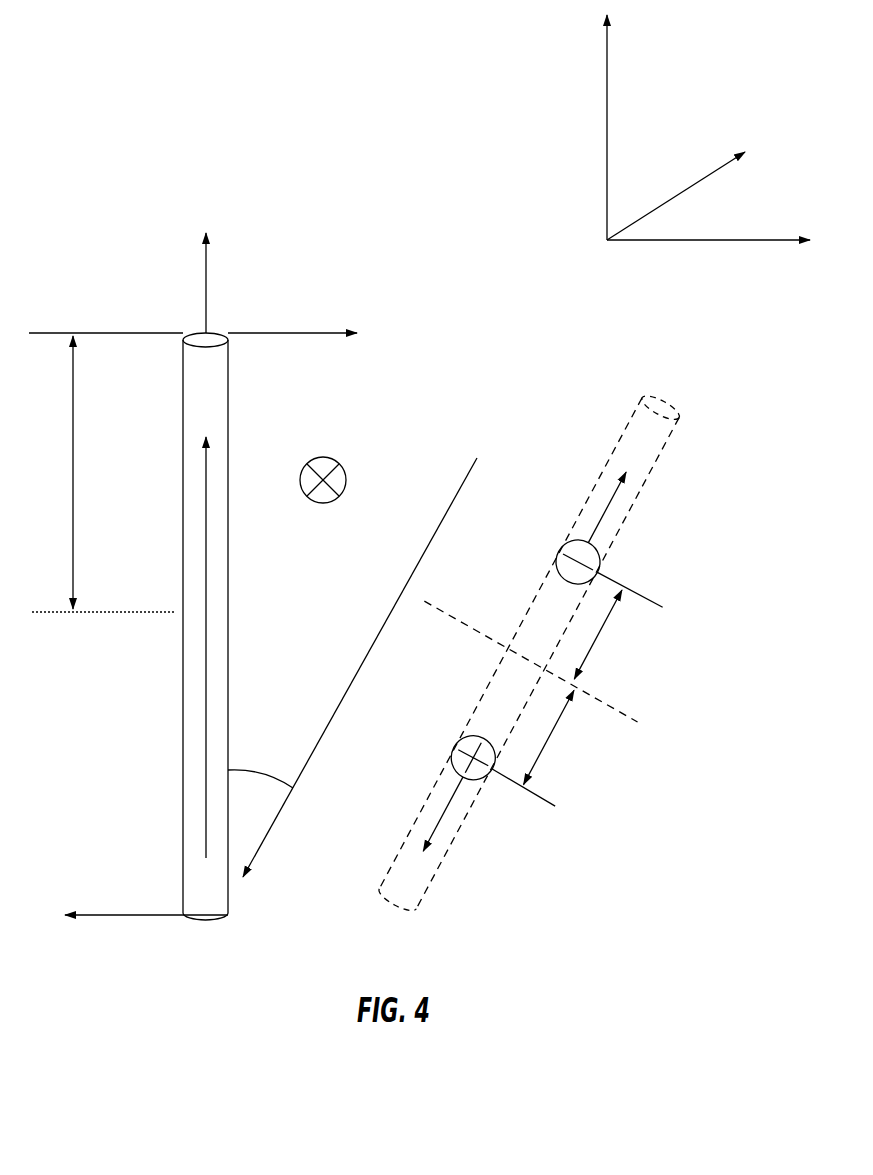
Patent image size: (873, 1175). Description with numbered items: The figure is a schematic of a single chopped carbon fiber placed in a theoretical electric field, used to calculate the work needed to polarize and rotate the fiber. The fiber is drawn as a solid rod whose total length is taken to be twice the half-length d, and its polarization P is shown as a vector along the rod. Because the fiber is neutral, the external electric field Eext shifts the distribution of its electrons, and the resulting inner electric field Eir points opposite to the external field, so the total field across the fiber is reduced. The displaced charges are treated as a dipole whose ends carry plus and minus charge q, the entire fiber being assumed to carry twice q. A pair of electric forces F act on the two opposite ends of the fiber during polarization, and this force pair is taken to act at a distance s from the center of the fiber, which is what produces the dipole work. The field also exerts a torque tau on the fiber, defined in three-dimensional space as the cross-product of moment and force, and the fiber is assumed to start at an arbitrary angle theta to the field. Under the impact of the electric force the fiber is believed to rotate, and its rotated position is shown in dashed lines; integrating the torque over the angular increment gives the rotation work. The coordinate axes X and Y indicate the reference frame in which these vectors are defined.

The polarization P is at (222, 576).
The force F is at (187, 640).
The half-length of fiber d is at (193, 472).
The inner electric field Eir is at (204, 627).
The torque tau is at (344, 480).
The angle theta is at (271, 762).
The charge q is at (561, 670).
The external electric field Eext is at (524, 661).
The distance from center s is at (572, 687).
The x axis X is at (708, 150).
The y axis Y is at (676, 184).